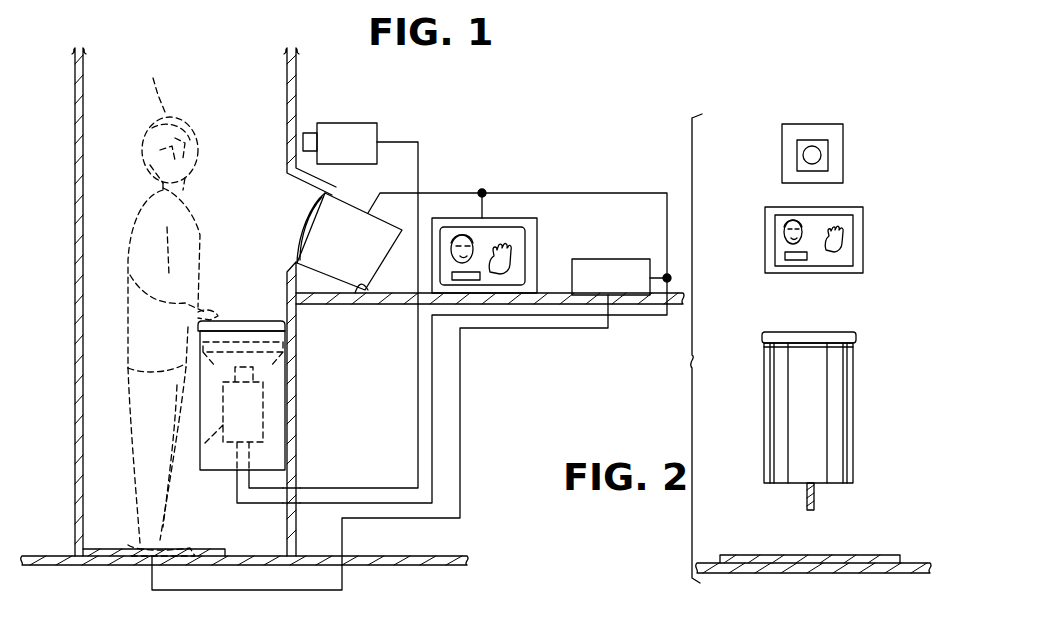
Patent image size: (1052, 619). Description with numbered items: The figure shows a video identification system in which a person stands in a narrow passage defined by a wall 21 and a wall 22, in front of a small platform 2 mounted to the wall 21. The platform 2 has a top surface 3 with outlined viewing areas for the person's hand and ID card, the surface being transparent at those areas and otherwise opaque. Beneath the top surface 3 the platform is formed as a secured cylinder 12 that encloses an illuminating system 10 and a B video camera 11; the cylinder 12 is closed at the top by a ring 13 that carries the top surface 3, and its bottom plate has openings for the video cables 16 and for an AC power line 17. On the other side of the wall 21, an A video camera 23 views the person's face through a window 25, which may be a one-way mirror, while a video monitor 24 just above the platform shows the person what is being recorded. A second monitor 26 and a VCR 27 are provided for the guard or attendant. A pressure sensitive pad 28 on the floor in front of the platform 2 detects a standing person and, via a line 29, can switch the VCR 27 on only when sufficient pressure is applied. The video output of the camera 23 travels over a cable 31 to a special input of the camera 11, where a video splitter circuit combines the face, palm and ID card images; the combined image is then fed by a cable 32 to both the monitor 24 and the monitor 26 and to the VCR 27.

In FIG. 1, the platform 2 is at (232, 400).
In FIG. 2, the platform 2 is at (814, 412).
In FIG. 1, the top surface 3 is at (268, 316).
In FIG. 2, the top surface 3 is at (826, 332).
In FIG. 1, the illuminating system 10 is at (217, 372).
In FIG. 1, the B video camera 11 is at (201, 448).
In FIG. 2, the secured cylinder 12 is at (853, 392).
In FIG. 2, the ring 13 is at (856, 340).
In FIG. 1, the video cables 16 is at (304, 480).
In FIG. 2, the video cables 16 is at (856, 504).
In FIG. 2, the AC power line 17 is at (822, 500).
In FIG. 1, the wall 21 is at (286, 519).
In FIG. 2, the wall 21 is at (766, 523).
In FIG. 1, the wall 22 is at (84, 470).
In FIG. 1, the A video camera 23 is at (340, 122).
In FIG. 2, the A video camera 23 is at (829, 152).
In FIG. 1, the video monitor 24 is at (366, 300).
In FIG. 2, the video monitor 24 is at (848, 253).
In FIG. 1, the window 25 is at (298, 120).
In FIG. 2, the window 25 is at (809, 153).
In FIG. 1, the monitor 26 is at (505, 218).
In FIG. 1, the VCR 27 is at (595, 259).
In FIG. 1, the pressure sensitive pad 28 is at (105, 549).
In FIG. 1, the line 29 is at (462, 462).
In FIG. 1, the cable 31 is at (418, 402).
In FIG. 1, the cable 32 is at (432, 368).